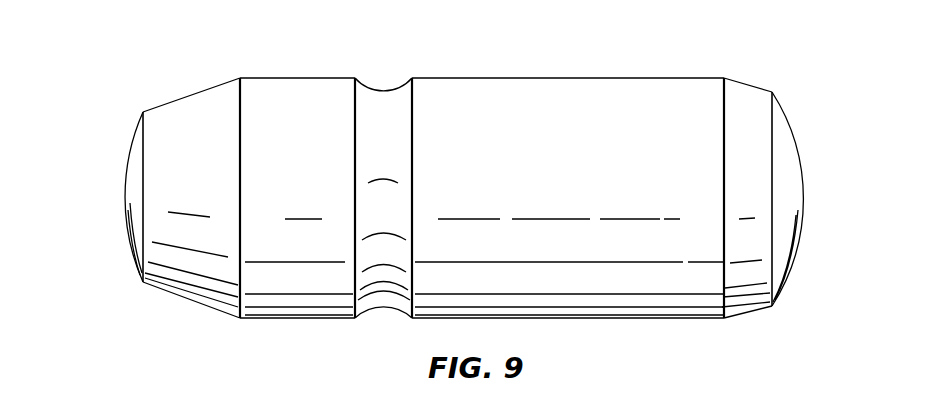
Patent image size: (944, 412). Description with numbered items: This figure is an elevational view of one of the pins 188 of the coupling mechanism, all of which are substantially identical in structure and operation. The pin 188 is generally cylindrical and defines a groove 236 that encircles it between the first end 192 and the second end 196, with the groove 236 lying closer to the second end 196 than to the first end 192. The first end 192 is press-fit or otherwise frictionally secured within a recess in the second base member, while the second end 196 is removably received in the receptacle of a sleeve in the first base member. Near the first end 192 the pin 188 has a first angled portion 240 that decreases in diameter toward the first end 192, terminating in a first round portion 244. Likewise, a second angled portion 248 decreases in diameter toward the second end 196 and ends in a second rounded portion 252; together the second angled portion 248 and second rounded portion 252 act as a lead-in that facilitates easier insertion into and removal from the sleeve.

The pin 188 is at (451, 186).
The second end 196 is at (106, 190).
The second rounded portion 252 is at (128, 242).
The second angled portion 248 is at (200, 305).
The groove 236 is at (377, 88).
The first angled portion 240 is at (748, 82).
The first end 192 is at (809, 186).
The first round portion 244 is at (795, 257).